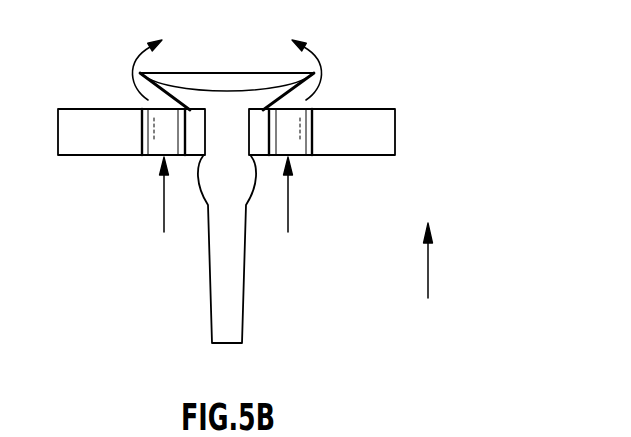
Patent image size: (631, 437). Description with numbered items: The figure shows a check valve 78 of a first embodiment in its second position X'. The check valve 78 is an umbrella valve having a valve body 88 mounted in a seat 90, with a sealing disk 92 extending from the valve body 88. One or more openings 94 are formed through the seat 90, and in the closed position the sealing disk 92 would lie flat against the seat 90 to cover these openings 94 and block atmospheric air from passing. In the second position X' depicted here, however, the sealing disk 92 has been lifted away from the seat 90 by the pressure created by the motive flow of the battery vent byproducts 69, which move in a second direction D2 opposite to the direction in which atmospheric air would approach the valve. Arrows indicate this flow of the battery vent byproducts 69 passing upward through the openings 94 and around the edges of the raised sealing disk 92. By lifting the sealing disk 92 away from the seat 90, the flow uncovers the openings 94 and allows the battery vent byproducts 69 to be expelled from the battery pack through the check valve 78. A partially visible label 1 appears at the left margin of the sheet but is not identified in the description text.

The valve 1 is at (5, 237).
The battery vent byproducts 69 is at (133, 70).
The check valve 78 is at (65, 66).
The valve body 88 is at (233, 257).
The seat 90 is at (91, 143).
The sealing disk 92 is at (227, 78).
The openings 94 is at (152, 157).
The second direction D2 is at (428, 270).
The second position X' is at (357, 54).